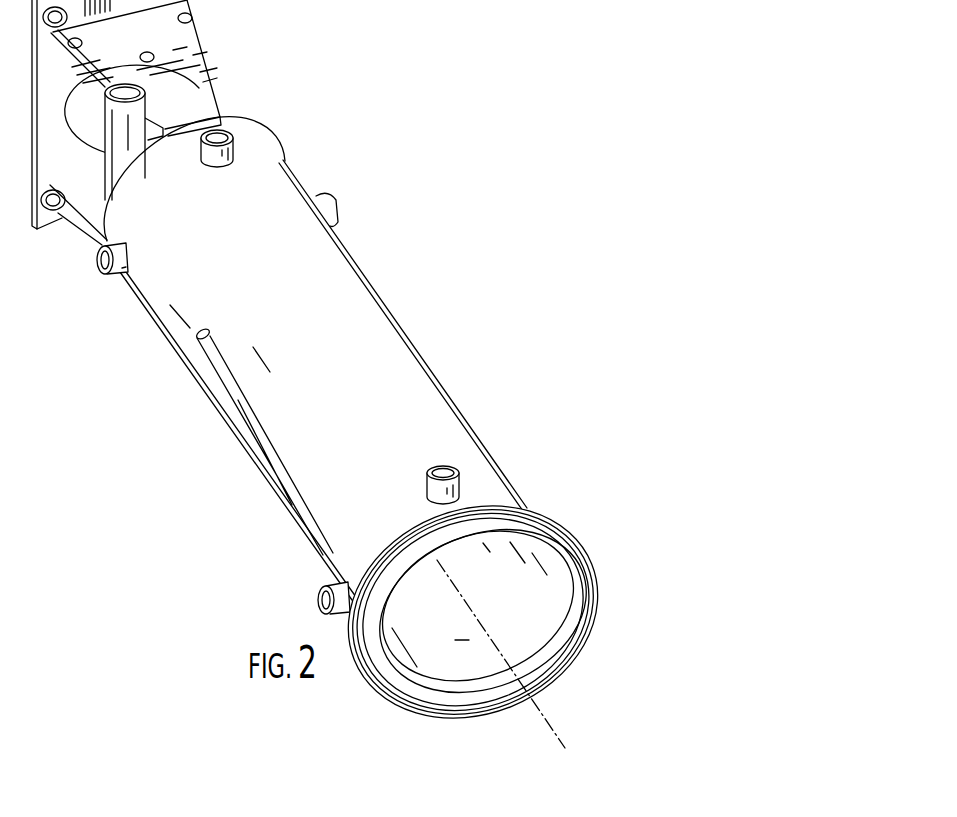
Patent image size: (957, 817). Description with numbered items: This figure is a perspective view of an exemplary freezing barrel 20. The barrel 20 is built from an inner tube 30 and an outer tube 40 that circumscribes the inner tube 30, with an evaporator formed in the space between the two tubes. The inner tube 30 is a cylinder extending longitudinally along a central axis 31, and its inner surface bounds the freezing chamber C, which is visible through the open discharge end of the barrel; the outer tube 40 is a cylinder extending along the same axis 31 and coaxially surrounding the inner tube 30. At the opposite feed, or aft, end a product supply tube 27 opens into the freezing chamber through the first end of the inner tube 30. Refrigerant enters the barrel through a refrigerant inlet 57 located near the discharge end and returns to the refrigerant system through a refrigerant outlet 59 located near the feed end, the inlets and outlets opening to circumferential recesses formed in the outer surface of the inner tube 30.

The freezing barrel 20 is at (332, 377).
The product supply tube 27 is at (213, 85).
The inner tube 30 is at (544, 560).
The central axis 31 is at (553, 725).
The outer tube 40 is at (355, 302).
The refrigerant inlet 57 is at (460, 483).
The refrigerant outlet 59 is at (233, 143).